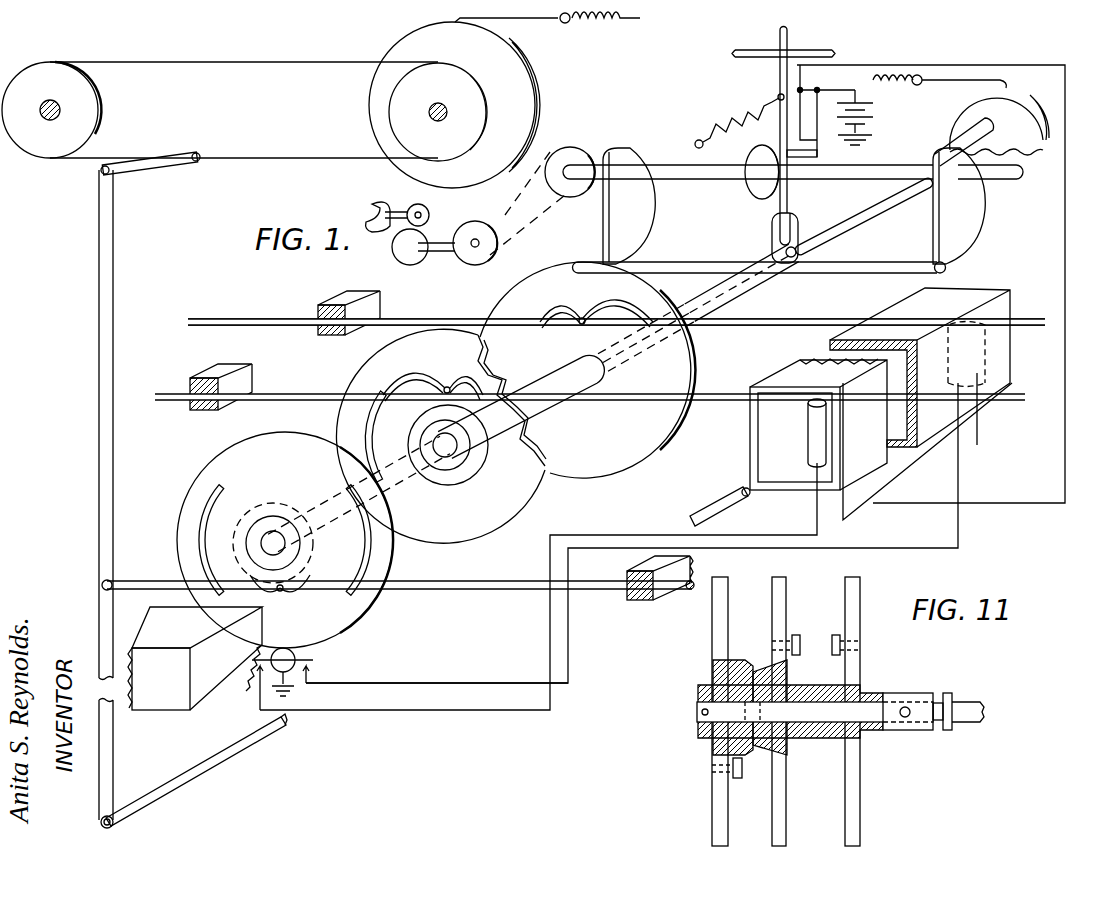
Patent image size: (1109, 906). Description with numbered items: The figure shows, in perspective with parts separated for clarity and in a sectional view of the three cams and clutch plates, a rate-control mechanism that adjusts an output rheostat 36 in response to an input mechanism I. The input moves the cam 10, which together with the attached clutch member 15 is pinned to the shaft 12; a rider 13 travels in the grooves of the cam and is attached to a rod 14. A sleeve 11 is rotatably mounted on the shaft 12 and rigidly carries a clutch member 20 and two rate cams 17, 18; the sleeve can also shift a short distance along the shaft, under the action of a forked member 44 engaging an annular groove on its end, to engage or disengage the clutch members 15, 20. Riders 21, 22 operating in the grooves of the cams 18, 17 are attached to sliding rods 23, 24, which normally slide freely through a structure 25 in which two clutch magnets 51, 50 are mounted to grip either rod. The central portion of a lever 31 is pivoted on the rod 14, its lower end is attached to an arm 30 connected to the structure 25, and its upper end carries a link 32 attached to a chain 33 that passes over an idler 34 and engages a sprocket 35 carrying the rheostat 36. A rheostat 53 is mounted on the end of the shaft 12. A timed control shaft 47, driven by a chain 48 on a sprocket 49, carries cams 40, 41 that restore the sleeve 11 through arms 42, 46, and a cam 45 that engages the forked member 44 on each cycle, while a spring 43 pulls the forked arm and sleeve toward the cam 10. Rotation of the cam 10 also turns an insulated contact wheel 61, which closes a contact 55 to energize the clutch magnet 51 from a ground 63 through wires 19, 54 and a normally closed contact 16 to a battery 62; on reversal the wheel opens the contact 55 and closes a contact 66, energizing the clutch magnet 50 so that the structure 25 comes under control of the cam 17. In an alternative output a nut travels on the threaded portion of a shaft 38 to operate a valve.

In FIG. 1, the cam 10 is at (350, 620).
In FIG. 11, the cam 10 is at (710, 798).
In FIG. 1, the sleeve 11 is at (762, 283).
In FIG. 11, the sleeve 11 is at (895, 695).
In FIG. 1, the shaft 12 is at (870, 210).
In FIG. 11, the shaft 12 is at (966, 703).
In FIG. 1, the rider 13 is at (282, 600).
In FIG. 1, the rod 14 is at (478, 590).
In FIG. 11, the rod 14 is at (742, 780).
In FIG. 1, the clutch member 15 is at (276, 515).
In FIG. 11, the clutch member 15 is at (734, 668).
In FIG. 1, the normally closed contact 16 is at (819, 143).
In FIG. 1, the cam 17 is at (500, 540).
In FIG. 11, the cam 17 is at (788, 800).
In FIG. 1, the cam 18 is at (626, 478).
In FIG. 11, the cam 18 is at (862, 800).
In FIG. 1, the wire 19 is at (483, 684).
In FIG. 1, the clutch member 20 is at (462, 470).
In FIG. 11, the clutch member 20 is at (765, 670).
In FIG. 1, the rider 21 is at (576, 327).
In FIG. 1, the rider 22 is at (450, 385).
In FIG. 1, the sliding rod 23 is at (796, 324).
In FIG. 11, the sliding rod 23 is at (835, 635).
In FIG. 1, the sliding rod 24 is at (694, 398).
In FIG. 11, the sliding rod 24 is at (796, 635).
In FIG. 1, the structure 25 is at (966, 288).
In FIG. 1, the arm 30 is at (234, 762).
In FIG. 1, the lever 31 is at (98, 404).
In FIG. 1, the link 32 is at (160, 162).
In FIG. 1, the chain 33 is at (325, 158).
In FIG. 1, the idler 34 is at (32, 158).
In FIG. 1, the sprocket 35 is at (463, 152).
In FIG. 1, the rheostat 36 is at (537, 73).
In FIG. 1, the shaft 38 is at (434, 121).
In FIG. 1, the cam 40 is at (600, 210).
In FIG. 1, the cam 41 is at (976, 232).
In FIG. 1, the arm 42 is at (668, 267).
In FIG. 1, the spring 43 is at (710, 118).
In FIG. 1, the forked member 44 is at (775, 205).
In FIG. 1, the cam 45 is at (748, 186).
In FIG. 1, the arm 46 is at (868, 267).
In FIG. 11, the arm 46 is at (904, 722).
In FIG. 1, the timed control shaft 47 is at (997, 182).
In FIG. 1, the chain 48 is at (485, 231).
In FIG. 1, the sprocket 49 is at (586, 152).
In FIG. 1, the clutch magnet 50 is at (846, 450).
In FIG. 1, the clutch magnet 51 is at (986, 354).
In FIG. 1, the rheostat 53 is at (950, 126).
In FIG. 1, the wire 54 is at (1066, 290).
In FIG. 1, the contact 55 is at (312, 668).
In FIG. 1, the insulated contact wheel 61 is at (296, 659).
In FIG. 1, the battery 62 is at (875, 117).
In FIG. 1, the ground 63 is at (292, 690).
In FIG. 1, the contact 66 is at (254, 674).